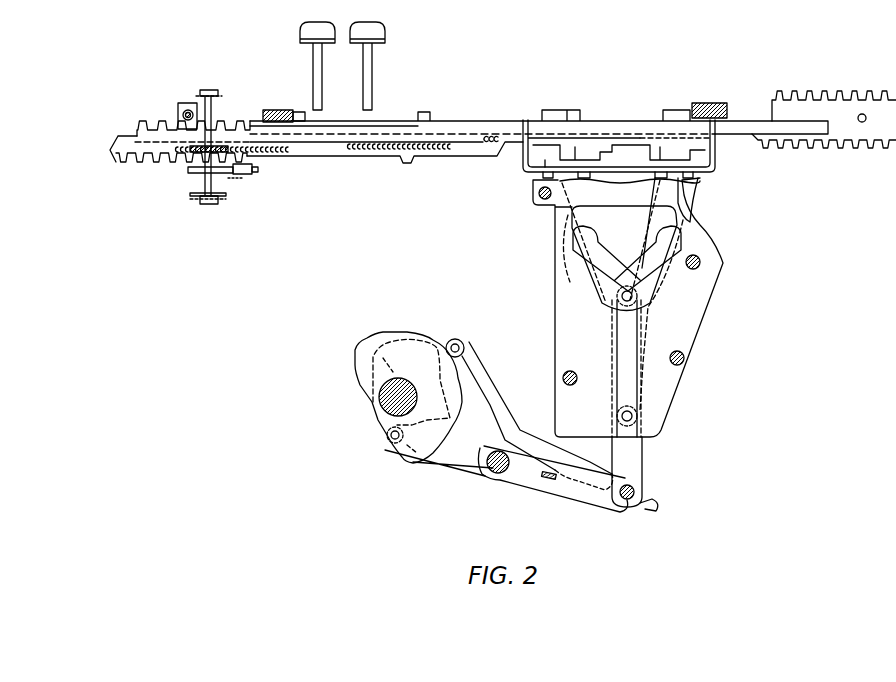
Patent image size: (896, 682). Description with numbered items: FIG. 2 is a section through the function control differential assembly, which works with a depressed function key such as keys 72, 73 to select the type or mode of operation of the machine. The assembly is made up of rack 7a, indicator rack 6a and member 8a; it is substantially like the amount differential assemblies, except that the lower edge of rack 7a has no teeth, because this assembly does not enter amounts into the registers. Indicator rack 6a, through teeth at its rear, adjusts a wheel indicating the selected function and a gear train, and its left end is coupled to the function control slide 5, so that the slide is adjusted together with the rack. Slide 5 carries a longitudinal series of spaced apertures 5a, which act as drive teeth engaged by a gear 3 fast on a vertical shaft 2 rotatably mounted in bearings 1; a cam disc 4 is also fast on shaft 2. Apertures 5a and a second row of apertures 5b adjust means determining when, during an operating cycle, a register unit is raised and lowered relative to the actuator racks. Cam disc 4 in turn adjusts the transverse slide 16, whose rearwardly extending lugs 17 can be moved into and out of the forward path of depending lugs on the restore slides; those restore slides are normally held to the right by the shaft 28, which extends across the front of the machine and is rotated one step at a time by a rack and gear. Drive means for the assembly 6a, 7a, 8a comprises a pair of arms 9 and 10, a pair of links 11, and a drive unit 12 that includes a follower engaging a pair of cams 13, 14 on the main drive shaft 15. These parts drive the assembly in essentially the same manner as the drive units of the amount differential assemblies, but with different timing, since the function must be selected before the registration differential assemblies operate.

The bearings 1 is at (214, 92).
The vertical shaft 2 is at (212, 118).
The gear 3 is at (188, 149).
The cam disc 4 is at (195, 174).
The function control slide 5 is at (118, 145).
The apertures 5a is at (286, 152).
The second row of apertures 5b is at (449, 152).
The indicator rack 6a is at (862, 126).
The rack 7a is at (145, 126).
The differential assembly member 8a is at (325, 130).
The arm 9 is at (600, 240).
The arm 10 is at (655, 280).
The links 11 is at (627, 330).
The drive unit 12 is at (532, 480).
The cam 13 is at (372, 350).
The cam 14 is at (368, 370).
The main drive shaft 15 is at (392, 402).
The slide 16 is at (247, 178).
The lugs 17 is at (256, 171).
The shaft 28 is at (183, 100).
The function key 72 is at (313, 78).
The function key 73 is at (368, 72).